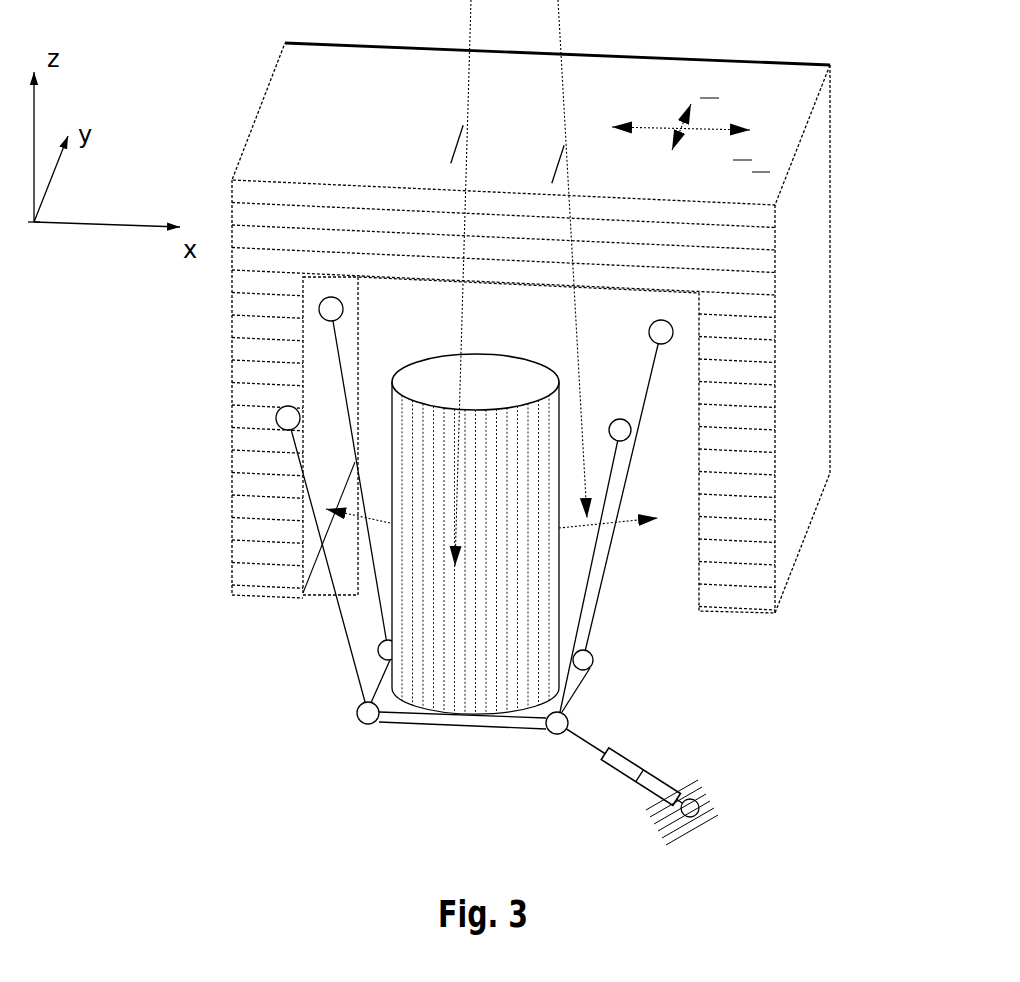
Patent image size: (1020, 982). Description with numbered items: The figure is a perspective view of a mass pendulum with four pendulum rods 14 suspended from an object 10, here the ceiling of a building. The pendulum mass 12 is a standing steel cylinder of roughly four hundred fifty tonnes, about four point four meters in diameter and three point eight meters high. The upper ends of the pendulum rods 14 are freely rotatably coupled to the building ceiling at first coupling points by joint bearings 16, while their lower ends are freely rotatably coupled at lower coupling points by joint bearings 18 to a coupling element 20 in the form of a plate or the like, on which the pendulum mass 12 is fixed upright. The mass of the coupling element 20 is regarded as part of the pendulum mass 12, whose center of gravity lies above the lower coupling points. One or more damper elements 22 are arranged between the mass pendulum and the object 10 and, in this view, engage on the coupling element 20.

The object 10 is at (802, 408).
The pendulum mass 12 is at (440, 378).
The pendulum rods 14 is at (330, 620).
The joint bearings 16 is at (270, 430).
The joint bearings 18 is at (354, 724).
The coupling element 20 is at (424, 732).
The damper elements 22 is at (660, 766).